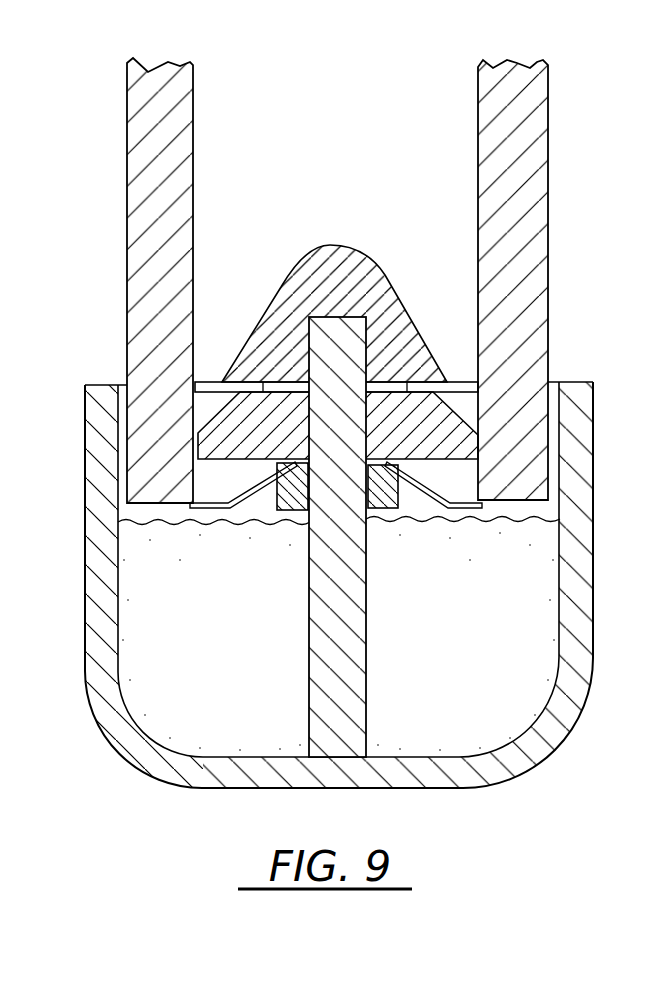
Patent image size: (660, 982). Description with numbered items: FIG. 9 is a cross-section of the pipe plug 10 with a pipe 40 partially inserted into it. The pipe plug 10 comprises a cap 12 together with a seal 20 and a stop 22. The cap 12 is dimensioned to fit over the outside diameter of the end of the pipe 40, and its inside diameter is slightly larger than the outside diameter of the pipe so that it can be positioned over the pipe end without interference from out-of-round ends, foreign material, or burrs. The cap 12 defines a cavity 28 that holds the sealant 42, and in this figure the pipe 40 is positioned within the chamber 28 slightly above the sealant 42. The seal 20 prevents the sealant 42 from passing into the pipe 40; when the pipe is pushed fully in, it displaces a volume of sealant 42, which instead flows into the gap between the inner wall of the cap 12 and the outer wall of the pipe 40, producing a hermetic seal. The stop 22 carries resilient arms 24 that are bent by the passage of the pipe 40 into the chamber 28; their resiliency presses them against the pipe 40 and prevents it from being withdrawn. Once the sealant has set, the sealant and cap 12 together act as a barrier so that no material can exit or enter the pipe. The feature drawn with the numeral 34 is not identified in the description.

The pipe plug 10 is at (371, 440).
The cap 12 is at (537, 765).
The seal 20 is at (226, 404).
The stop 22 is at (454, 525).
The arms 24 is at (227, 513).
The cavity 28 is at (220, 670).
The dome 34 is at (360, 250).
The pipe 40 is at (551, 325).
The sealant 42 is at (537, 634).